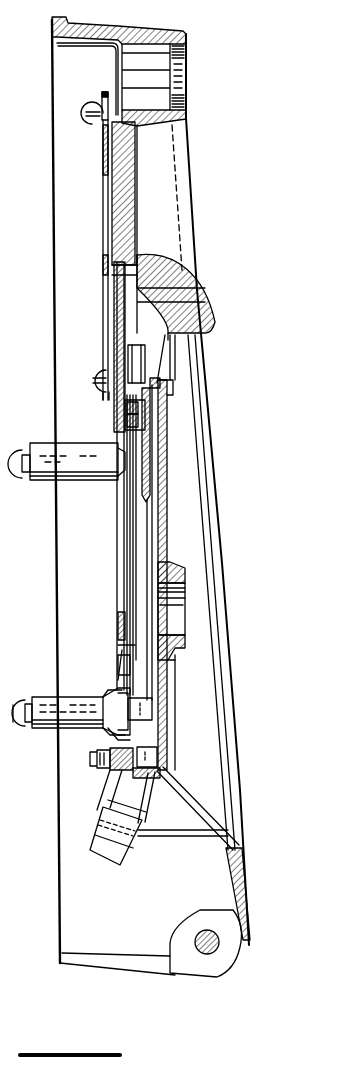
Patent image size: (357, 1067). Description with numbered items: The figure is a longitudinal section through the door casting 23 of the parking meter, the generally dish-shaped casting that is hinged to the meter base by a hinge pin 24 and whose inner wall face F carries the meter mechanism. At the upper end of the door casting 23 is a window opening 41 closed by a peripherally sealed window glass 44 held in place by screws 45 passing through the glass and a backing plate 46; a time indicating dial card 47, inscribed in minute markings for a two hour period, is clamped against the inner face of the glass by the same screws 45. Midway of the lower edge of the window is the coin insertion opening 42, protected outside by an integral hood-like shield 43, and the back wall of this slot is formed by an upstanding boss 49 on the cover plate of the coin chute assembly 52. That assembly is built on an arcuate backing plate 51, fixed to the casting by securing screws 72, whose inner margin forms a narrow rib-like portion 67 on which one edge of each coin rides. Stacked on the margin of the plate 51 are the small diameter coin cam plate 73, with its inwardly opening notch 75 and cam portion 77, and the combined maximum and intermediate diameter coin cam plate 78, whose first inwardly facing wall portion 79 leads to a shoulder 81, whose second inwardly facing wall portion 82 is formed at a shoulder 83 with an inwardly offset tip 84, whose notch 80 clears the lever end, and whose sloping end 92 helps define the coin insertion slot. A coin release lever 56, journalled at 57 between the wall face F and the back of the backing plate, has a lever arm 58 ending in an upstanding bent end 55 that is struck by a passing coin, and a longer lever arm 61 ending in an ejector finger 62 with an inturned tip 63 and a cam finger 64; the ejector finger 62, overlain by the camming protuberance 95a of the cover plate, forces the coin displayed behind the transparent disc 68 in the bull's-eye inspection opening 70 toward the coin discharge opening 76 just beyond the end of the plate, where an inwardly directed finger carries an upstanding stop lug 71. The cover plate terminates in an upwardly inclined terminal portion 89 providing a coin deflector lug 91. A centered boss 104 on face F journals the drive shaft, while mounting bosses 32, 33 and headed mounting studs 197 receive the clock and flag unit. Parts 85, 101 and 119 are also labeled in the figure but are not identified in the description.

The door casting 23 is at (198, 251).
The hinge pin 24 is at (207, 955).
The mounting boss 32 is at (38, 731).
The mounting boss 33 is at (36, 483).
The window opening 41 is at (140, 132).
The coin insertion opening 42 is at (169, 348).
The hood-like shield 43 is at (199, 303).
The window glass 44 is at (135, 166).
The screws 45 is at (96, 102).
The backing plate 46 is at (102, 140).
The time indicating dial card 47 is at (102, 158).
The boss 49 is at (114, 300).
The backing plate 51 is at (168, 466).
The coin chute assembly 52 is at (106, 270).
The upstanding bent end 55 is at (126, 422).
The coin release lever 56 is at (165, 531).
The journal 57 is at (137, 472).
The lever arm 58 is at (152, 487).
The longer lever arm 61 is at (171, 621).
The ejector finger 62 is at (100, 728).
The inturned tip 63 is at (113, 705).
The cam finger 64 is at (152, 712).
The rib-like portion 67 is at (133, 508).
The transparent disc 68 is at (157, 752).
The bull's-eye inspection opening 70 is at (176, 690).
The stop lug 71 is at (104, 760).
The securing screws 72 is at (97, 373).
The small diameter coin cam plate 73 is at (142, 340).
The notch 75 is at (167, 402).
The coin discharge opening 76 is at (127, 783).
The cam portion 77 is at (130, 585).
The combined maximum and intermediate diameter coin cam plate 78 is at (117, 357).
The first inwardly facing wall portion 79 is at (126, 488).
The notch 80 is at (152, 383).
The shoulder 81 is at (128, 536).
The second inwardly facing wall portion 82 is at (124, 620).
The shoulder 83 is at (124, 650).
The inwardly offset tip 84 is at (124, 667).
The block 85 is at (126, 408).
The upwardly inclined terminal portion 89 is at (103, 800).
The coin deflector lug 91 is at (104, 856).
The sloping end 92 is at (118, 363).
The camming protuberance 95a is at (112, 685).
The block 101 is at (112, 770).
The centered boss 104 is at (176, 578).
The plate 119 is at (162, 775).
The headed mounting studs 197 is at (22, 706).
The inner wall face F is at (176, 676).